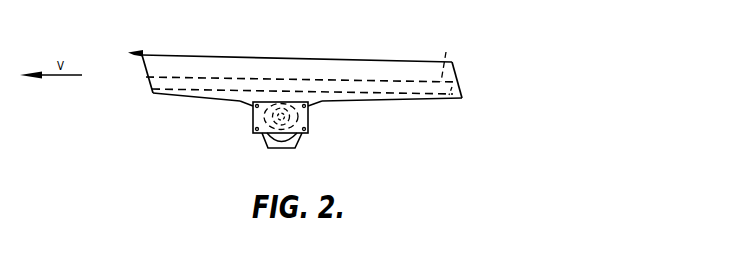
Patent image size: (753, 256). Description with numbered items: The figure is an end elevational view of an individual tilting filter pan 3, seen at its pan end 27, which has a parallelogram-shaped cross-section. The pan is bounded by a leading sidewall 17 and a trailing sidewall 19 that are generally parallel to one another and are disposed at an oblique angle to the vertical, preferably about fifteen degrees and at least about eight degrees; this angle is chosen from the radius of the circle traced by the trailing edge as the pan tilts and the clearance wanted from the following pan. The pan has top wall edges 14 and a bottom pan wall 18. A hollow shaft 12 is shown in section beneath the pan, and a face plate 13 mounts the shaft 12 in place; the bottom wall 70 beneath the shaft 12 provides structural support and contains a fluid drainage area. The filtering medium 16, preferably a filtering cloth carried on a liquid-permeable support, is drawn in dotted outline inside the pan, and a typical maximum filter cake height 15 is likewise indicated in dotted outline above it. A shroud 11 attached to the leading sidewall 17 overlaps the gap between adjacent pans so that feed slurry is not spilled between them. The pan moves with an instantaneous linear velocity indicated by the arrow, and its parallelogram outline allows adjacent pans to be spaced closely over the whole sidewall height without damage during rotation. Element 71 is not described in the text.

The tilting filter pan 3 is at (472, 101).
The shroud 11 is at (146, 45).
The hollow shaft 12 is at (263, 136).
The face plate 13 is at (312, 118).
The top wall edges 14 is at (268, 57).
The maximum filter cake height 15 is at (446, 52).
The filtering medium 16 is at (457, 82).
The leading sidewall 17 is at (143, 70).
The bottom pan wall 18 is at (175, 97).
The trailing sidewall 19 is at (463, 88).
The pan end 27 is at (236, 74).
The bottom wall 70 is at (289, 150).
The gusset 71 is at (247, 105).